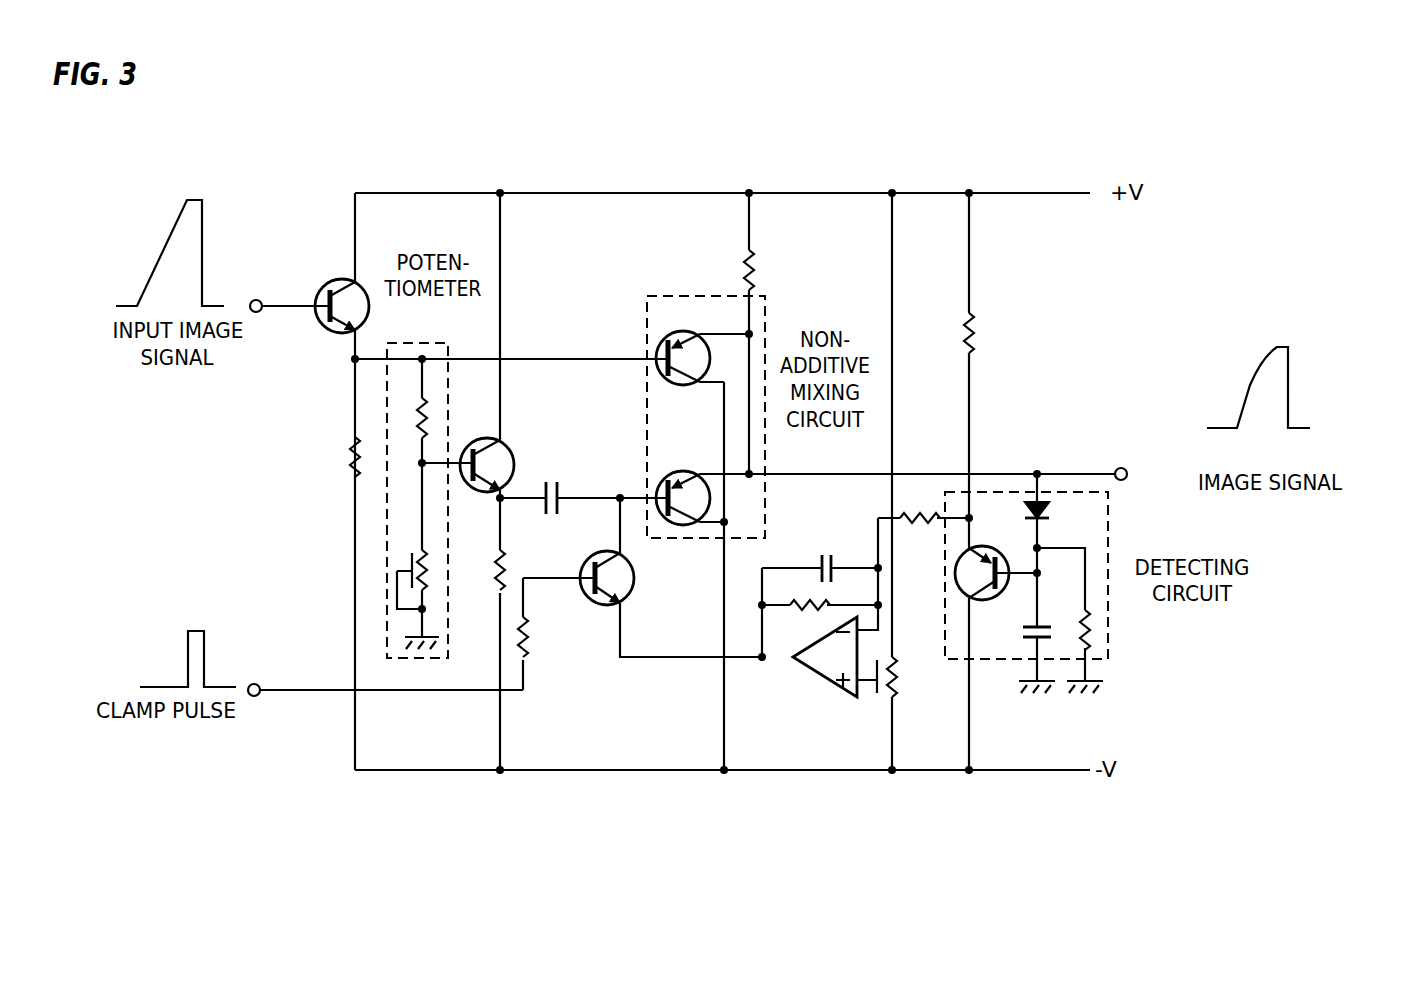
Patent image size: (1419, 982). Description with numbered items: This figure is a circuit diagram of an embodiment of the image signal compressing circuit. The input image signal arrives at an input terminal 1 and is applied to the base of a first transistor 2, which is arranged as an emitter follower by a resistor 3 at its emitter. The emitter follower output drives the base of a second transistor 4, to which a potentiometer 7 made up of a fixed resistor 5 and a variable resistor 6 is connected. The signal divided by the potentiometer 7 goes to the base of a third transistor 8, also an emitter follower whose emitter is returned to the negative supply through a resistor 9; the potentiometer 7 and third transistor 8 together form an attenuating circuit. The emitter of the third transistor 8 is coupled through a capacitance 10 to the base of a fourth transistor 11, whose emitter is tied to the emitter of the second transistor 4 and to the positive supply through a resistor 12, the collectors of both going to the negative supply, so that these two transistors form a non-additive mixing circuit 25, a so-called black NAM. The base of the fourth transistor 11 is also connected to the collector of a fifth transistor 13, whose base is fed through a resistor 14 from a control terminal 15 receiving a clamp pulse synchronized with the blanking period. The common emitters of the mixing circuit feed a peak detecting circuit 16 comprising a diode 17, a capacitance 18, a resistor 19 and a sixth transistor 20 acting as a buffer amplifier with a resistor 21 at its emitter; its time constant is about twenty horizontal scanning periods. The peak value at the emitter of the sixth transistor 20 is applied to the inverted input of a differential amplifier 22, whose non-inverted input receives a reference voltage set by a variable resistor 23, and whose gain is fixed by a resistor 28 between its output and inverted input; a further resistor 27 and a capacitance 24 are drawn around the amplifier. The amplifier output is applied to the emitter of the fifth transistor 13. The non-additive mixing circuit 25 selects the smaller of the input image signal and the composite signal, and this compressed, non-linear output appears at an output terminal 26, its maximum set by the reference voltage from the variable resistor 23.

The input terminal 1 is at (255, 300).
The first transistor 2 is at (332, 282).
The resistor 3 is at (350, 463).
The second transistor 4 is at (692, 333).
The fixed resistor 5 is at (428, 407).
The variable resistor 6 is at (430, 565).
The potentiometer 7 is at (413, 343).
The third transistor 8 is at (488, 440).
The resistor 9 is at (496, 562).
The capacitance 10 is at (550, 480).
The fourth transistor 11 is at (690, 472).
The resistor 12 is at (757, 265).
The fifth transistor 13 is at (595, 603).
The resistor 14 is at (530, 645).
The control terminal 15 is at (262, 665).
The peak detecting circuit 16 is at (1108, 560).
The diode 17 is at (1049, 512).
The capacitance 18 is at (1018, 632).
The resistor 19 is at (1097, 625).
The sixth transistor 20 is at (1000, 548).
The resistor 21 is at (975, 350).
The differential amplifier 22 is at (822, 678).
The variable resistor 23 is at (897, 692).
The capacitor 24 is at (815, 535).
The non-additive mixing circuit 25 is at (765, 340).
The output terminal 26 is at (1126, 469).
The resistor 27 is at (925, 524).
The resistor 28 is at (817, 610).